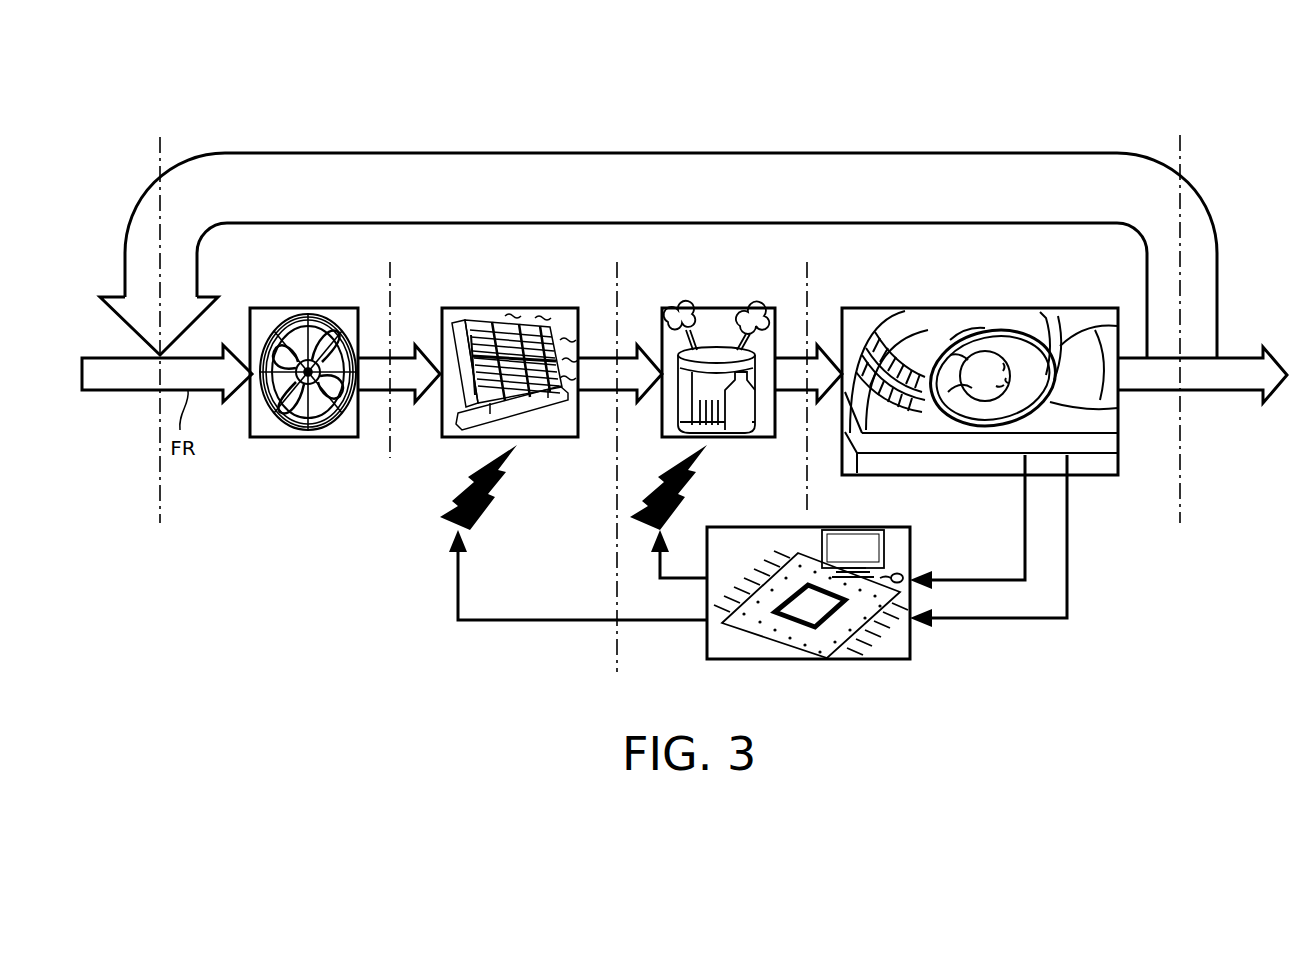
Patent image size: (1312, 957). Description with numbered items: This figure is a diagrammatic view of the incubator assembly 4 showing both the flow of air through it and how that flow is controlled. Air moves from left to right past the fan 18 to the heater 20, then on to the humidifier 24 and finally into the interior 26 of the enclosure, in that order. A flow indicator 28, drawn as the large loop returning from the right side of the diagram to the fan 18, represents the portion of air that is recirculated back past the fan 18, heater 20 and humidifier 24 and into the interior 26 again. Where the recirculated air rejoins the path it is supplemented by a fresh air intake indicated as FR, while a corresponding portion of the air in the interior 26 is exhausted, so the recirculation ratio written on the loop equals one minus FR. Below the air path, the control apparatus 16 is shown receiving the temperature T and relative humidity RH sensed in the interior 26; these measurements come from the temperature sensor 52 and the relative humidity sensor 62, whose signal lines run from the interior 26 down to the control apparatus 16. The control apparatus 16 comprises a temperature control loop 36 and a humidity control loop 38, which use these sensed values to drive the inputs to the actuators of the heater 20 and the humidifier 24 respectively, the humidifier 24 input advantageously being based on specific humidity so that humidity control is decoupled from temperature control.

The incubator assembly 4 is at (150, 122).
The control apparatus 16 is at (870, 672).
The fan 18 is at (309, 308).
The heater 20 is at (510, 308).
The humidifier 24 is at (720, 308).
The interior 26 is at (980, 308).
The flow indicator 28 is at (670, 153).
The temperature control loop 36 is at (458, 582).
The humidity control loop 38 is at (660, 565).
The temperature sensor 52 is at (1067, 456).
The relative humidity sensor 62 is at (1025, 456).